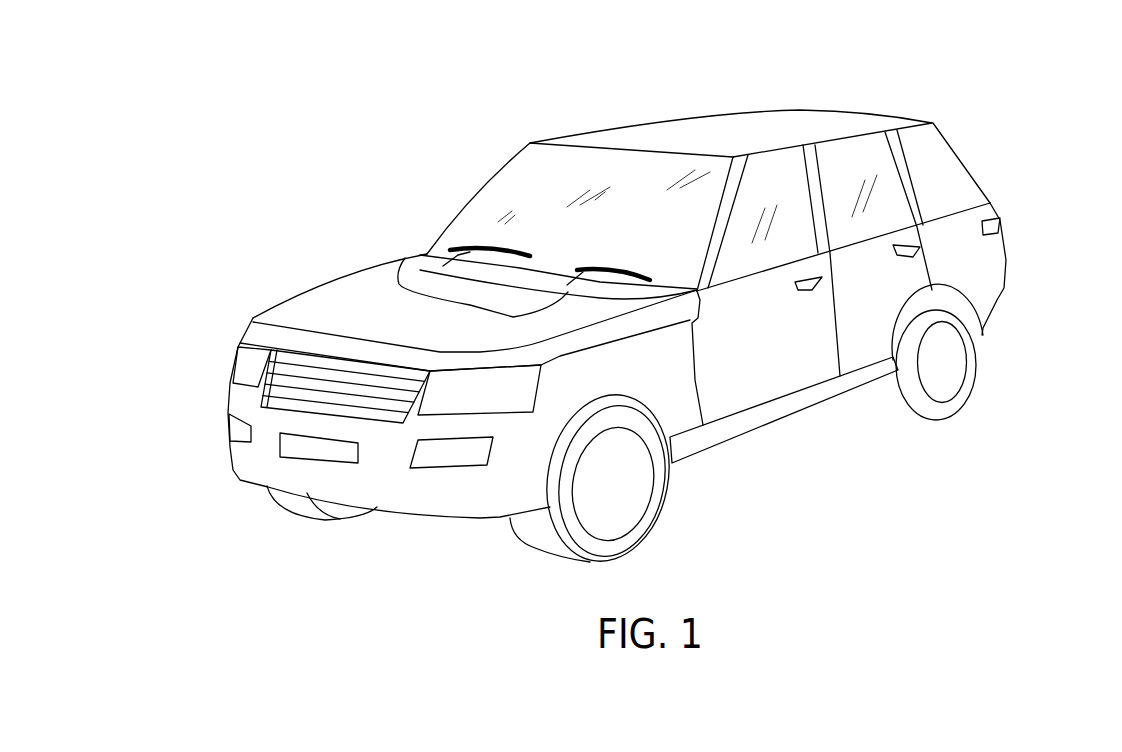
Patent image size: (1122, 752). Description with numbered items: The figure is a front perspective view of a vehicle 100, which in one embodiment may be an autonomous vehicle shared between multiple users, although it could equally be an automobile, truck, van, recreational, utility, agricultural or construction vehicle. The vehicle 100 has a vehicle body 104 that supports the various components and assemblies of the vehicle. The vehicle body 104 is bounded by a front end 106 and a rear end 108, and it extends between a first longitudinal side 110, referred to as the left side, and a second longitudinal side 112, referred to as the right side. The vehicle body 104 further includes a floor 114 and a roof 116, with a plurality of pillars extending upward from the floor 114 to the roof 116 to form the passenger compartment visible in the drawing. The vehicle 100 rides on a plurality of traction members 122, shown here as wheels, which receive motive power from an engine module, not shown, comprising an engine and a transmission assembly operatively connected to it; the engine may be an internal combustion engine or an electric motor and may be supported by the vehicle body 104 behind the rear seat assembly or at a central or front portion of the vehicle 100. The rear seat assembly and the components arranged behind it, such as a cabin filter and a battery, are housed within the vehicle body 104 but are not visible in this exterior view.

The vehicle 100 is at (866, 52).
The vehicle body 104 is at (660, 363).
The front end 106 is at (400, 472).
The rear end 108 is at (1000, 222).
The first longitudinal side 110 is at (943, 242).
The second longitudinal side 112 is at (562, 137).
The floor 114 is at (787, 407).
The roof 116 is at (712, 130).
The traction members 122 is at (622, 507).